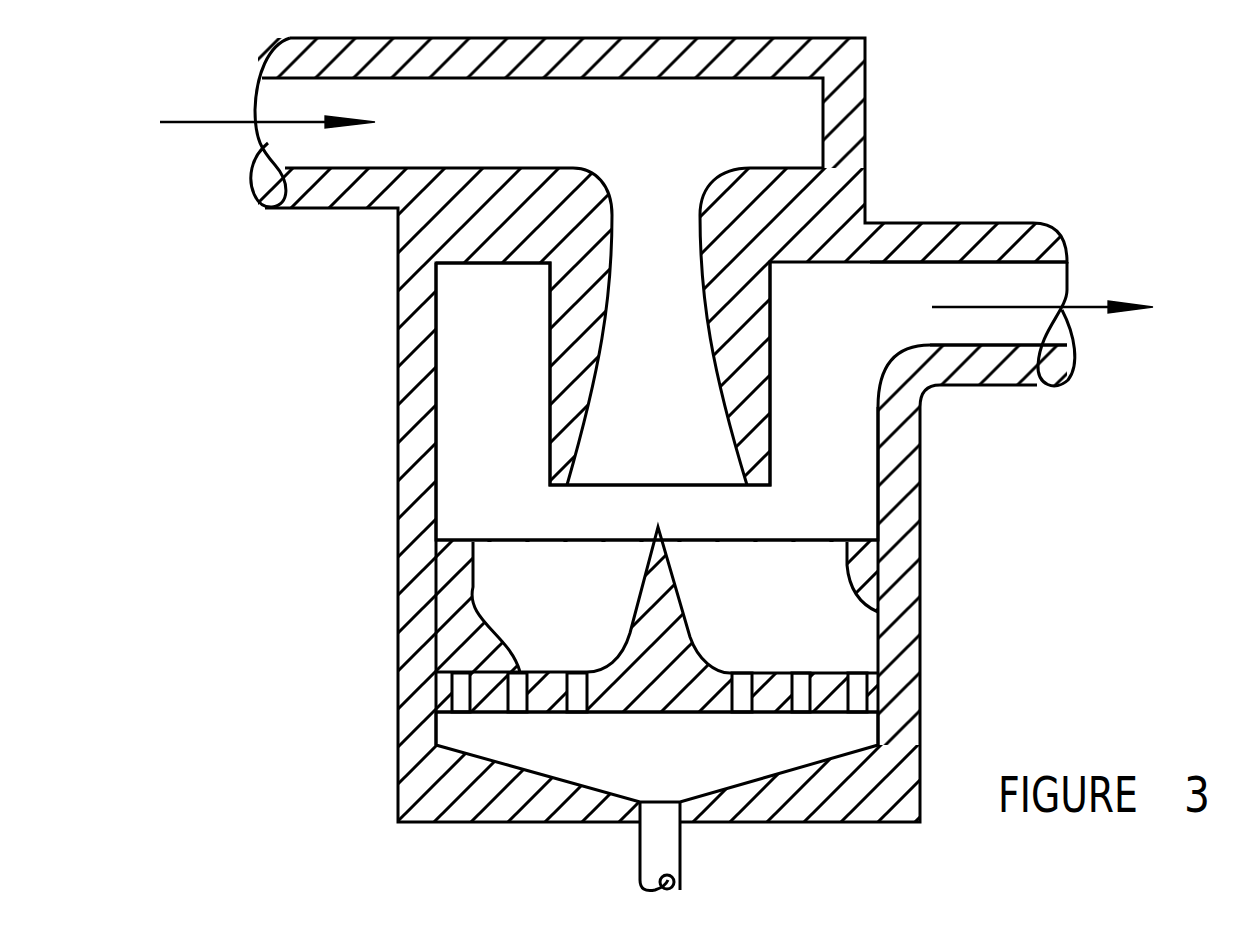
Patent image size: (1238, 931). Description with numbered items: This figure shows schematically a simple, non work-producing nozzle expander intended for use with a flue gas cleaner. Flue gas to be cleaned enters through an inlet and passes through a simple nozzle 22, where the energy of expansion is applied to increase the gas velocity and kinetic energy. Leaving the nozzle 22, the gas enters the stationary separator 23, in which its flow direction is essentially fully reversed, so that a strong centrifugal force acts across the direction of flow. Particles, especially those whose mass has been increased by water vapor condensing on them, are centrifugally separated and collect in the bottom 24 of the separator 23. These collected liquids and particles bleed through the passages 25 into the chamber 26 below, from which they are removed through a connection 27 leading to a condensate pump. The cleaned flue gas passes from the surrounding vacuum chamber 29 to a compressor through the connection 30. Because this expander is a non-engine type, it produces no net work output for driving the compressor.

The nozzle 22 is at (637, 247).
The stationary separator 23 is at (750, 607).
The bottom of the separator 24 is at (523, 670).
The passages 25 is at (460, 698).
The chamber 26 is at (737, 755).
The connection to a condensate pump 27 is at (657, 845).
The vacuum chamber 29 is at (473, 372).
The connection to a compressor 30 is at (938, 290).